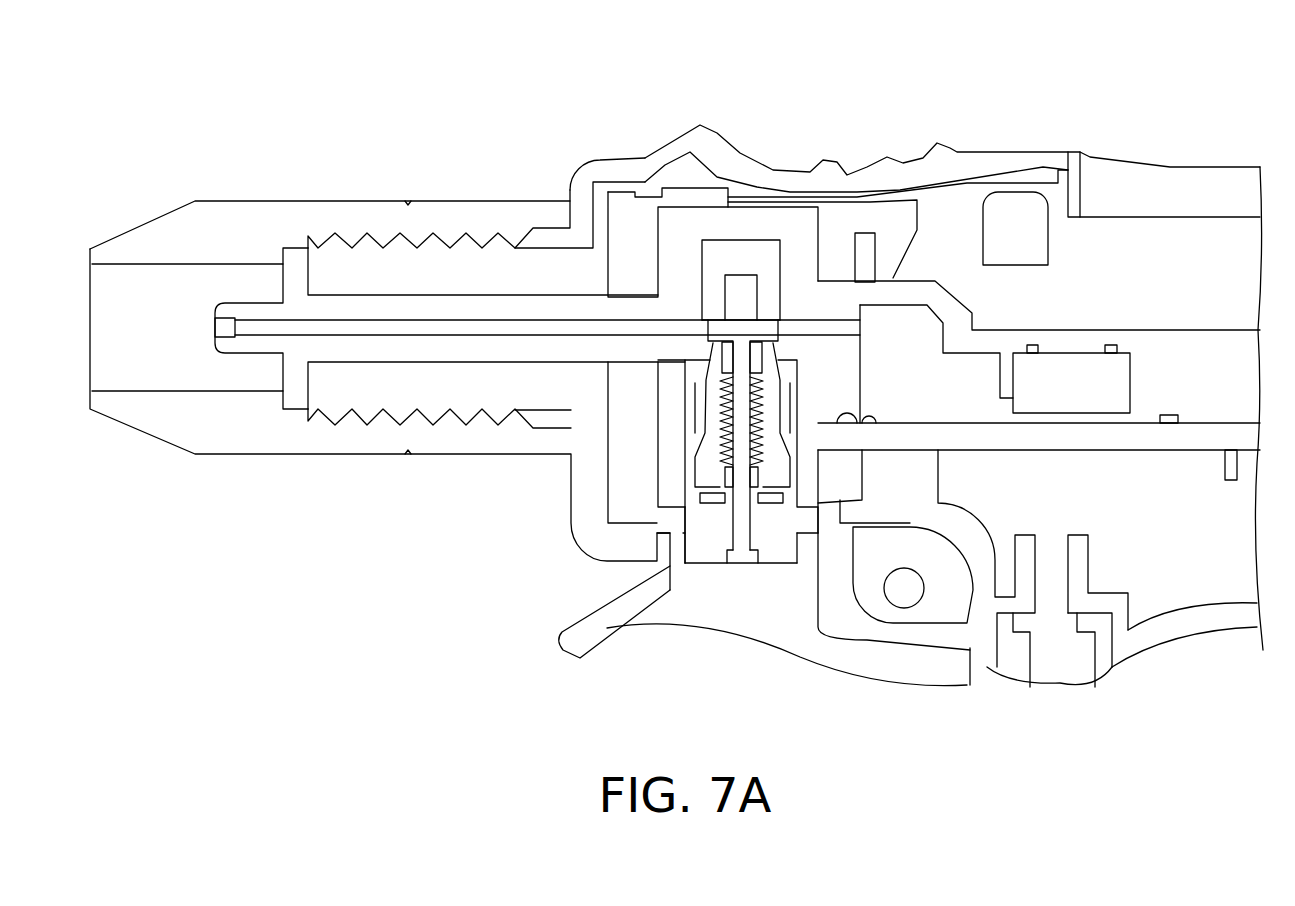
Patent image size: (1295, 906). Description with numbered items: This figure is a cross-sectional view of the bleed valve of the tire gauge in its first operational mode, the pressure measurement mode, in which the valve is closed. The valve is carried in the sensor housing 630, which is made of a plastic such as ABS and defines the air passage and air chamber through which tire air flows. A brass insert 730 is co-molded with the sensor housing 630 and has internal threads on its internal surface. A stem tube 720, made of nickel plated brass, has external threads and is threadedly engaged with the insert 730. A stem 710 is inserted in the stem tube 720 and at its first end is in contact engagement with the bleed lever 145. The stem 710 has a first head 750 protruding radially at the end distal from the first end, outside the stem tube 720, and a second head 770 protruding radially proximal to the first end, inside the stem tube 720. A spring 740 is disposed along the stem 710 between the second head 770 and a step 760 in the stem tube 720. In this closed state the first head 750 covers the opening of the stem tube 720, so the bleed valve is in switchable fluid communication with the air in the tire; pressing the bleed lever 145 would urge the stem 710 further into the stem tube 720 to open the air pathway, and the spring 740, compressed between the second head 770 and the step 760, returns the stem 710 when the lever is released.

The bleed lever 145 is at (678, 602).
The sensor housing 630 is at (672, 265).
The stem 710 is at (740, 528).
The stem tube 720 is at (697, 482).
The insert 730 is at (687, 452).
The spring 740 is at (763, 383).
The first head 750 is at (763, 328).
The step 760 is at (712, 372).
The second head 770 is at (760, 535).